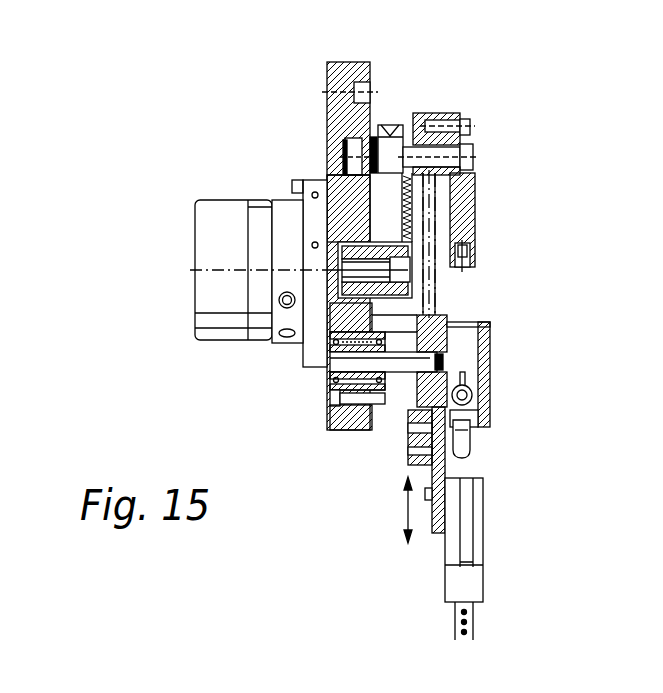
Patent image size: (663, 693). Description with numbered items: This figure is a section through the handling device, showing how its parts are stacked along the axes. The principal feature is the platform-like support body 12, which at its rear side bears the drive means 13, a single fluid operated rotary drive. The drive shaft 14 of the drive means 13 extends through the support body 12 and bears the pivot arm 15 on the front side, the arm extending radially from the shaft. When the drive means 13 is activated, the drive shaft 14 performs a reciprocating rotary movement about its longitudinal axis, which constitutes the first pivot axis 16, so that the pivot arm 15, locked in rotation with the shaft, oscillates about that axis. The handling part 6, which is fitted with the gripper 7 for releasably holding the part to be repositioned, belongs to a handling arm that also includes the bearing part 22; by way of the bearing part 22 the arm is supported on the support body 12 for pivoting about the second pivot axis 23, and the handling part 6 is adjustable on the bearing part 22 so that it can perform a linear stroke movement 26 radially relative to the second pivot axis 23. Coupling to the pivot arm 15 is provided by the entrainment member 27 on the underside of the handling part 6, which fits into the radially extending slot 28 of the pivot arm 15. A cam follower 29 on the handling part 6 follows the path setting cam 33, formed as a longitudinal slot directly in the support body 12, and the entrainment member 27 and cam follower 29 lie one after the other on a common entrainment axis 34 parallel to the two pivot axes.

The handling part 6 is at (461, 172).
The gripper 7 is at (467, 543).
The support body 12 is at (344, 68).
The drive means 13 is at (247, 300).
The drive shaft 14 is at (388, 289).
The pivot arm 15 is at (383, 127).
The first pivot axis 16 is at (355, 297).
The bearing part 22 is at (433, 332).
The second pivot axis 23 is at (397, 375).
The linear stroke movement 26 is at (408, 513).
The entrainment member 27 is at (396, 130).
The slot 28 is at (392, 191).
The cam follower 29 is at (354, 140).
The path setting cam 33 is at (362, 173).
The entrainment axis 34 is at (435, 113).